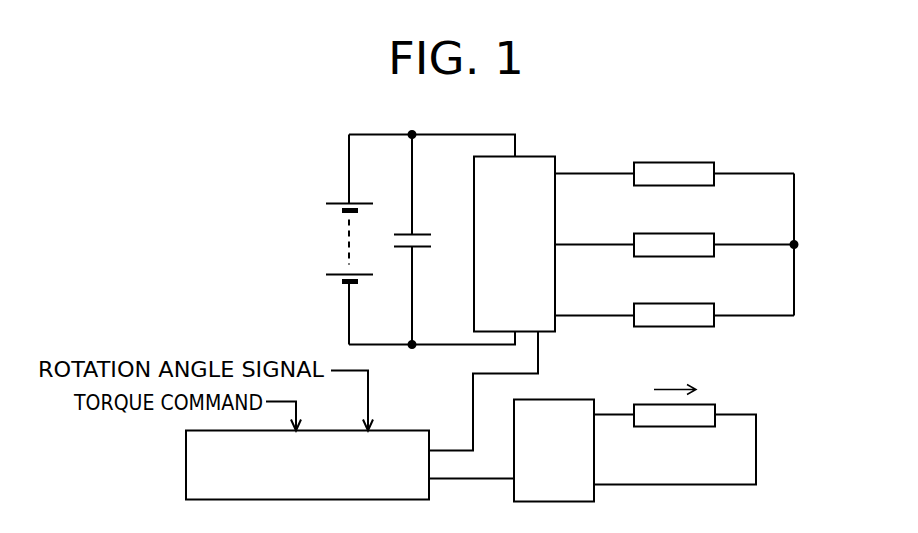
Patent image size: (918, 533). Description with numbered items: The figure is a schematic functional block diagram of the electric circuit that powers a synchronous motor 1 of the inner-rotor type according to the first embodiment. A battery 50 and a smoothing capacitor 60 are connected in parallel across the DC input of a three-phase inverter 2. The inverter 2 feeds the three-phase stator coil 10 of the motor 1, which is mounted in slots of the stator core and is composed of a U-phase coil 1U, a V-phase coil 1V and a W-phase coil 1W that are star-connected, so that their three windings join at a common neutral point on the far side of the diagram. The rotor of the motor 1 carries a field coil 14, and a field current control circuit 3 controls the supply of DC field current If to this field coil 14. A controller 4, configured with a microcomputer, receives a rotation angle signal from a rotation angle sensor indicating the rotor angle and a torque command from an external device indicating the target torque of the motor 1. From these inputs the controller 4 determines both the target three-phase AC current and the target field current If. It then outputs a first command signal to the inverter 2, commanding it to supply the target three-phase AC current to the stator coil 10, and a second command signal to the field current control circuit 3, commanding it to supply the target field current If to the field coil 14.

The synchronous motor 1 is at (681, 195).
The three-phase stator coil 10 is at (674, 202).
The U-phase coil 1U is at (669, 160).
The V-phase coil 1V is at (696, 232).
The W-phase coil 1W is at (696, 302).
The three-phase inverter 2 is at (537, 153).
The field current control circuit 3 is at (563, 397).
The controller 4 is at (185, 465).
The field coil 14 is at (705, 402).
The battery 50 is at (328, 225).
The smoothing capacitor 60 is at (420, 246).